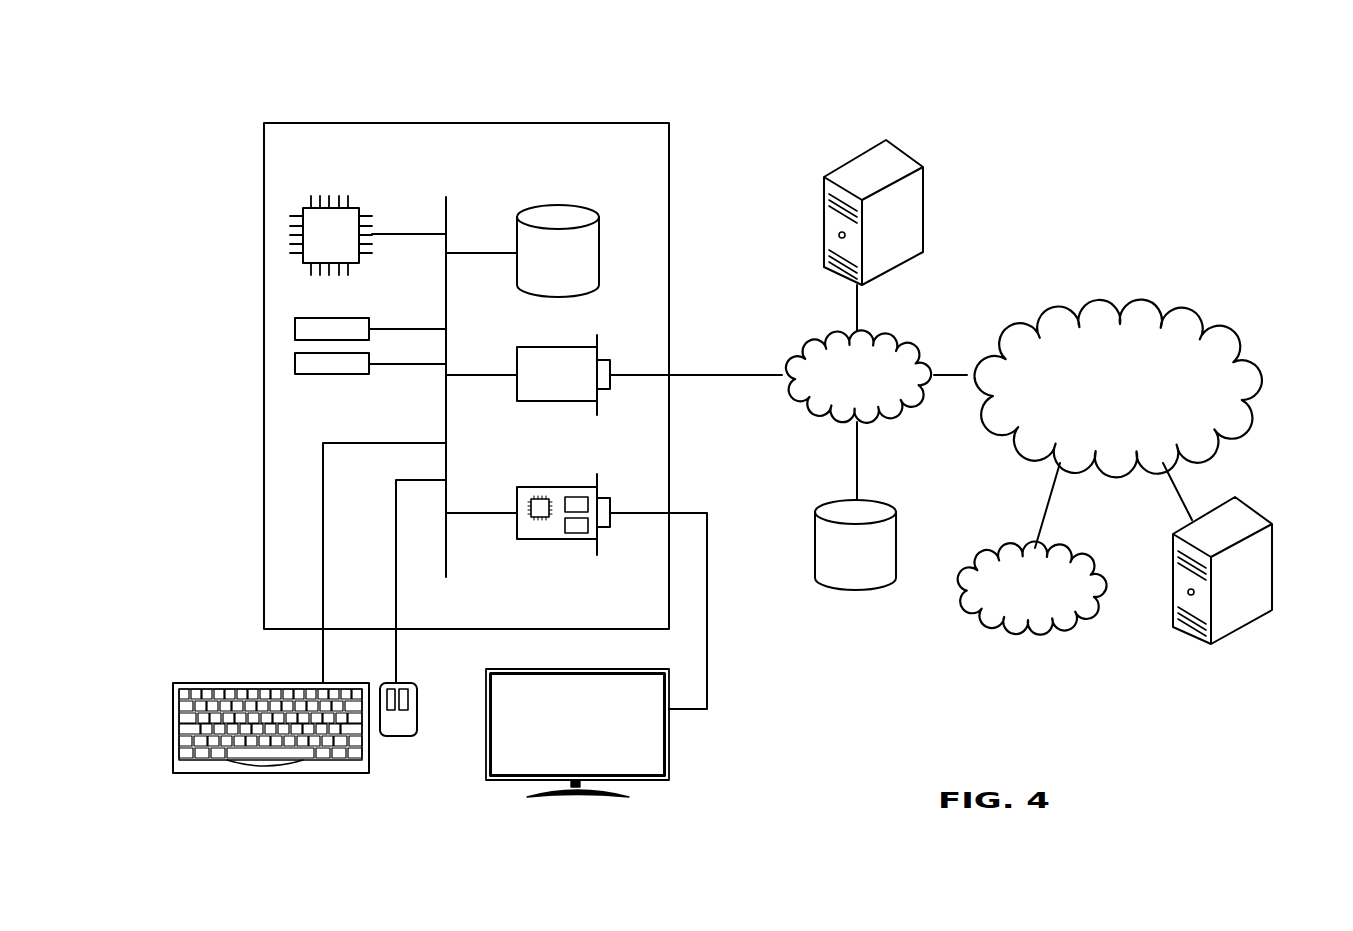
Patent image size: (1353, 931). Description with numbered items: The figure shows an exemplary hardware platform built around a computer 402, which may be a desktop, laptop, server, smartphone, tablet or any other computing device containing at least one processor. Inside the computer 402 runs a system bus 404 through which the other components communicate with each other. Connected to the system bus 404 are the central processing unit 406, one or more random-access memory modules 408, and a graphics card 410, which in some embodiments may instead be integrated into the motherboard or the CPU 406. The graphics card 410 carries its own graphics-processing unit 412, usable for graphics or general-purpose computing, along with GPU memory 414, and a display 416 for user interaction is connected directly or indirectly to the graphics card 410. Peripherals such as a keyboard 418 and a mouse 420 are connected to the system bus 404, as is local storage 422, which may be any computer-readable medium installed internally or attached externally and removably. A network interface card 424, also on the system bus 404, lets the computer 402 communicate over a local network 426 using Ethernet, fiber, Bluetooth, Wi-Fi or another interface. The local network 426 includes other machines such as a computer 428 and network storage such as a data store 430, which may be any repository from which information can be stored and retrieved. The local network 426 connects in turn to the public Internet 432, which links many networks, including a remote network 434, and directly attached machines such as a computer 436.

The computer 402 is at (625, 122).
The system bus 404 is at (446, 208).
The central processing unit (CPU) 406 is at (355, 206).
The random-access memory (RAM) modules 408 is at (370, 327).
The graphics card 410 is at (517, 498).
The graphics-processing unit (GPU) 412 is at (538, 518).
The GPU memory 414 is at (573, 533).
The display 416 is at (669, 759).
The keyboard 418 is at (273, 773).
The mouse 420 is at (395, 736).
The local storage 422 is at (599, 237).
The network interface card (NIC) 424 is at (517, 358).
The local network 426 is at (907, 332).
The computer 428 is at (908, 150).
The data store 430 is at (887, 503).
The public Internet 432 is at (1160, 298).
The remote network 434 is at (1085, 545).
The computer 436 is at (1250, 500).